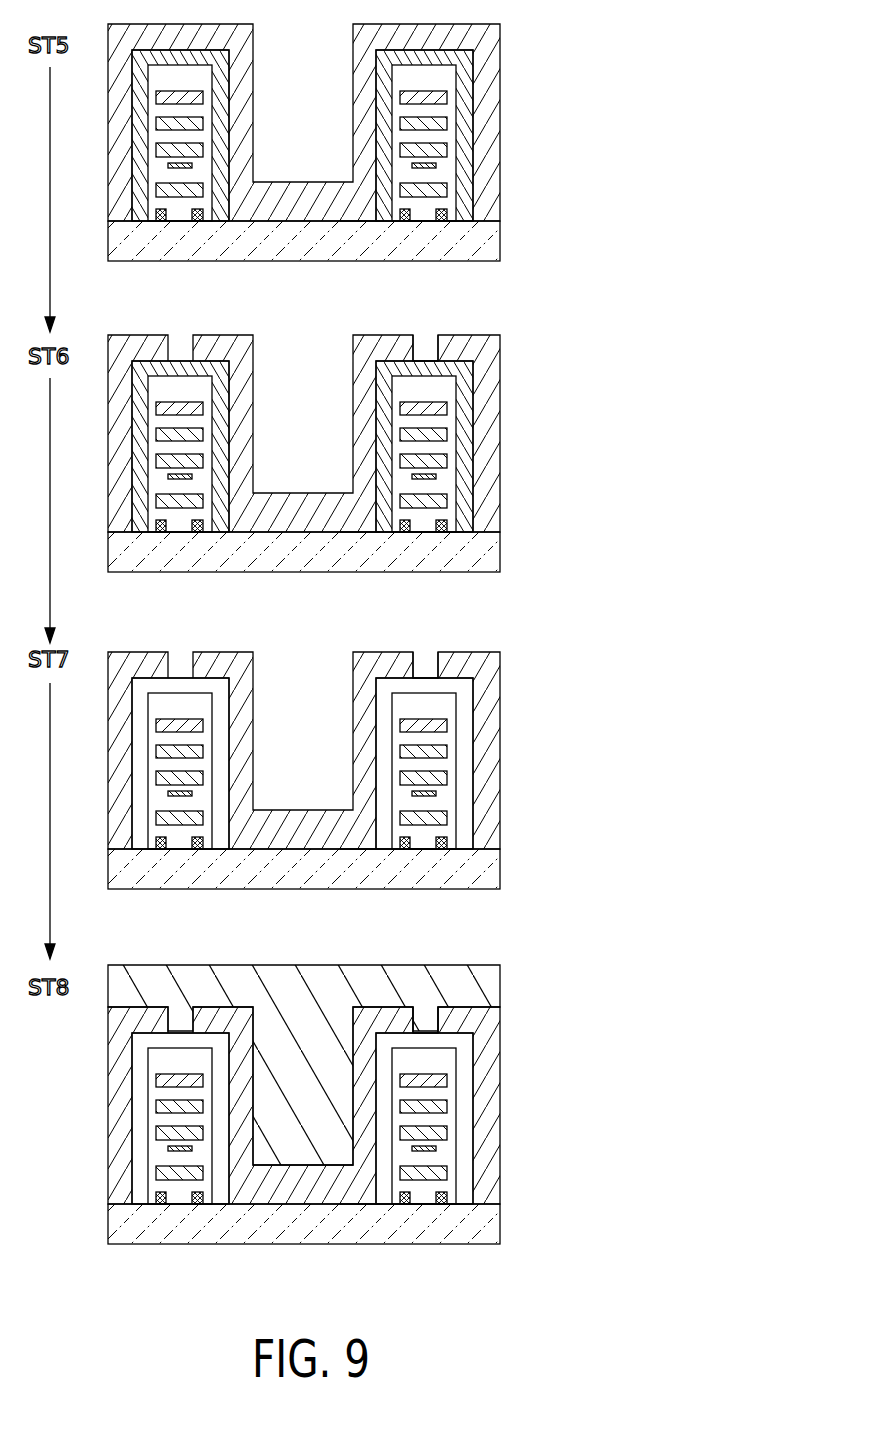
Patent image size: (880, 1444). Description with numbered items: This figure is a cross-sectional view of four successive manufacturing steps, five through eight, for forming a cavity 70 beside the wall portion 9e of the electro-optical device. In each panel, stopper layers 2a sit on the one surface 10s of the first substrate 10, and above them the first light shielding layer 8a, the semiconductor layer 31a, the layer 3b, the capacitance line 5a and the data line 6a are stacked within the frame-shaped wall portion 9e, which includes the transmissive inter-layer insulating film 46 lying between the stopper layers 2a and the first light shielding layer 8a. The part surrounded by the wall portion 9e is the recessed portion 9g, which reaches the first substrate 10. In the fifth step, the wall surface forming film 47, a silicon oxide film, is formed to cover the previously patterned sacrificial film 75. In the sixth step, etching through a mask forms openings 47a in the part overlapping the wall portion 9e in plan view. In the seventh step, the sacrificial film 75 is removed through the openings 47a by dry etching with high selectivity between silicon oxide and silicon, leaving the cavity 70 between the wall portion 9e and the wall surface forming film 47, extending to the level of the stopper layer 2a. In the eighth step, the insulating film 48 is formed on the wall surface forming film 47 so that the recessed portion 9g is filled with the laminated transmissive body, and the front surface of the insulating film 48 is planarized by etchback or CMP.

The wall surface forming film 47 is at (475, 35).
The openings 47a is at (437, 357).
The insulating film 48 is at (490, 987).
The inter-layer insulating film 46 is at (475, 63).
The recessed portion 9g is at (213, 112).
The wall portion 9e is at (460, 80).
The data line 6a is at (448, 97).
The capacitance line 5a is at (448, 124).
The lower electrode layer of element 1e 3b is at (448, 150).
The semiconductor layer 31a is at (432, 165).
The first light shielding layer 8a is at (448, 190).
The stopper layers 2a is at (441, 215).
The first substrate 10 is at (488, 243).
The one surface 10s is at (430, 222).
The sacrificial film 75 is at (363, 222).
The cavity 70 is at (366, 850).